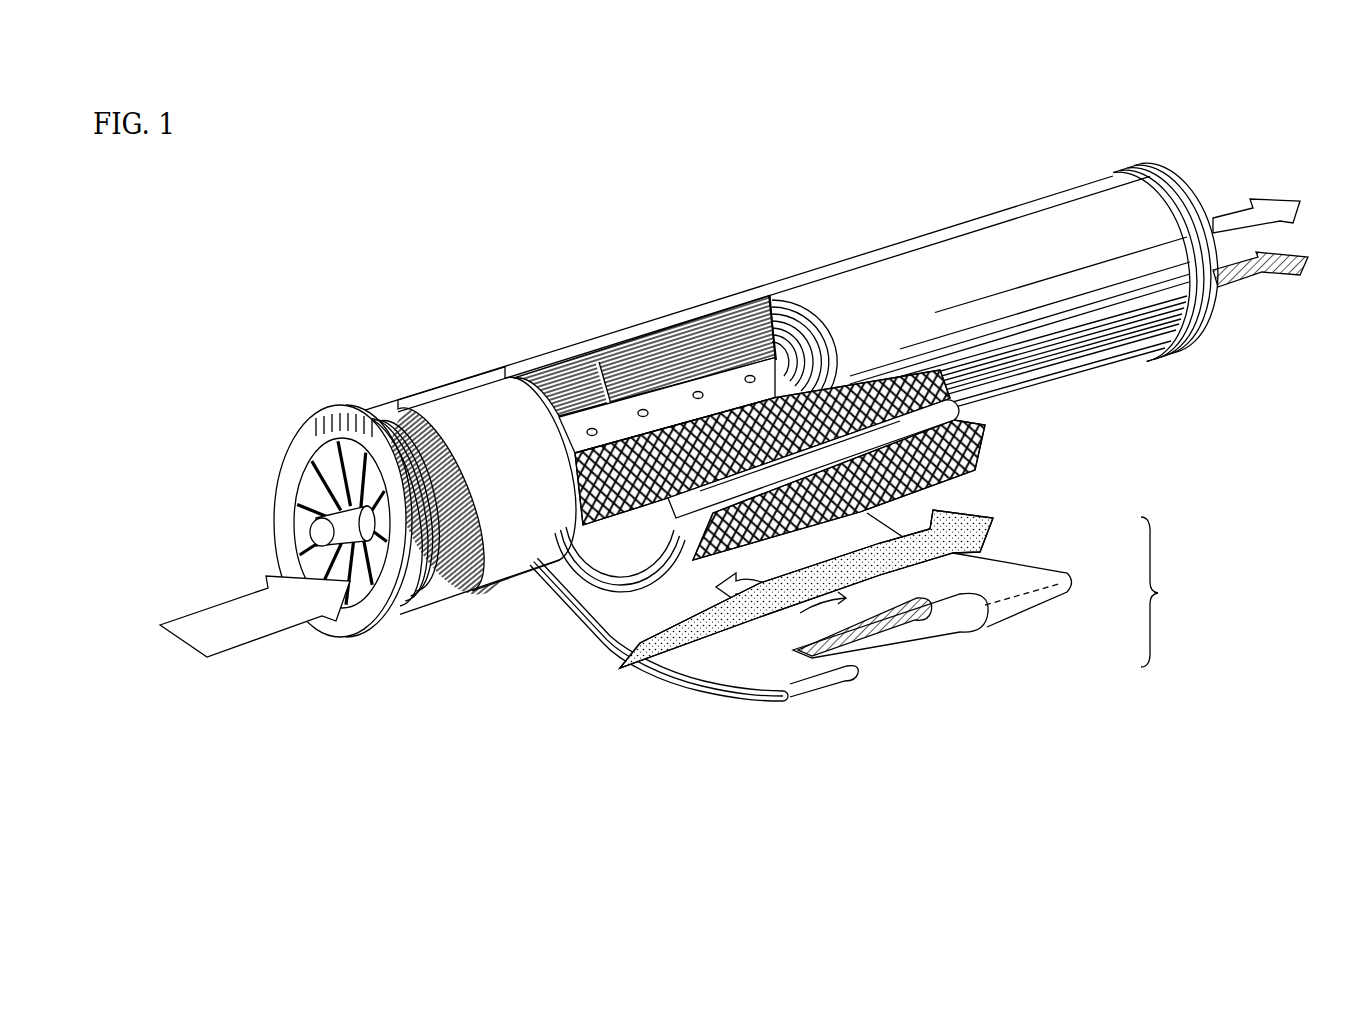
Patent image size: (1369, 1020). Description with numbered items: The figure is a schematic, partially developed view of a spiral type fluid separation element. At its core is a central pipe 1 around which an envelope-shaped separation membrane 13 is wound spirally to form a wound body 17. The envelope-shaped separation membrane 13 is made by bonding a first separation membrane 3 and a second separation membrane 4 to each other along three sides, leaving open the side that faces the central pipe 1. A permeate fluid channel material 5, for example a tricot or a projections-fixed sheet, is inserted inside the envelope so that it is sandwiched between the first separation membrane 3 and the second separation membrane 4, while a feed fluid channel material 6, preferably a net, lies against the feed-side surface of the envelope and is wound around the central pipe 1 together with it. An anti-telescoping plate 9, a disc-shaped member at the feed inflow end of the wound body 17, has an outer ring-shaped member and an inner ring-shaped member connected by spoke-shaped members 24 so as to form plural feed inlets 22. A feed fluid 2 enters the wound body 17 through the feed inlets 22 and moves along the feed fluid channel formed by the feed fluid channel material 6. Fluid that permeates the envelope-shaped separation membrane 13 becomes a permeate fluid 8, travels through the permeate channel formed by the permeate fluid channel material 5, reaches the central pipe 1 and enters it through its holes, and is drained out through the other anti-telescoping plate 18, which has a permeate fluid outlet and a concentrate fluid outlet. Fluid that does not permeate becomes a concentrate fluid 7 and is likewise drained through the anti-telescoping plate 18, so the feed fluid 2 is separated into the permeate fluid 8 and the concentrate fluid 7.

The central pipe 1 is at (667, 407).
The feed fluid 2 is at (610, 662).
The first separation membrane 3 is at (1000, 578).
The second separation membrane 4 is at (963, 633).
The permeate fluid channel material 5 is at (895, 630).
The feed fluid channel material 6 is at (963, 440).
The concentrate fluid 7 is at (1258, 284).
The permeate fluid 8 is at (1237, 222).
The anti-telescoping plate 9 is at (331, 546).
The envelope-shaped separation membrane 13 is at (1170, 592).
The wound body 17 is at (853, 257).
The anti-telescoping plate 18 is at (1118, 170).
The feed inlets 22 is at (358, 602).
The spoke-shaped members 24 is at (424, 620).